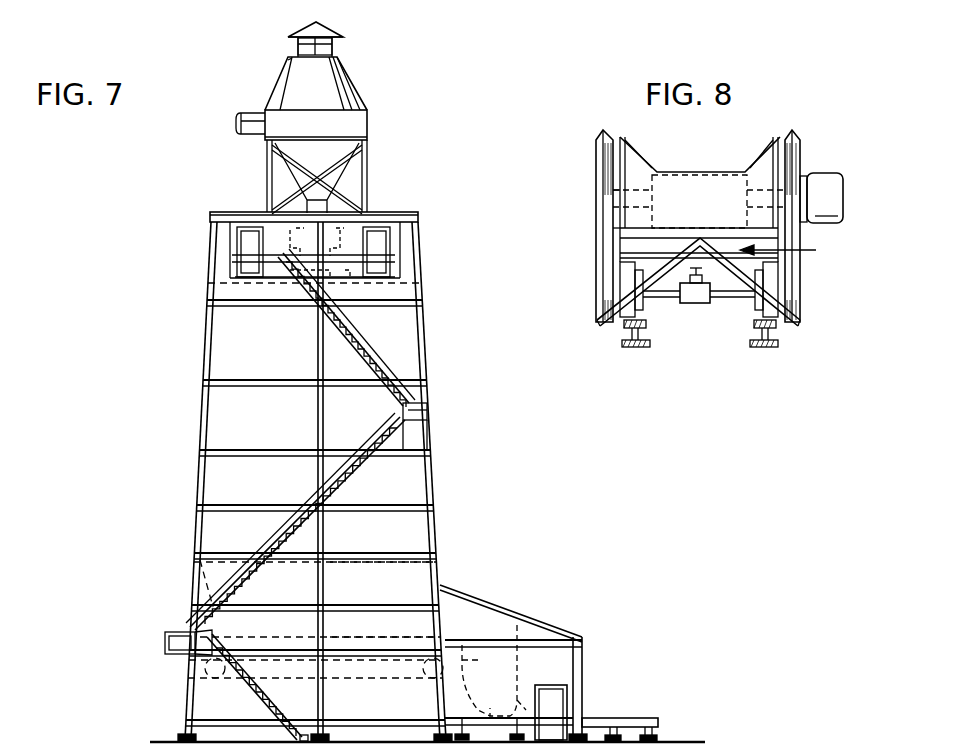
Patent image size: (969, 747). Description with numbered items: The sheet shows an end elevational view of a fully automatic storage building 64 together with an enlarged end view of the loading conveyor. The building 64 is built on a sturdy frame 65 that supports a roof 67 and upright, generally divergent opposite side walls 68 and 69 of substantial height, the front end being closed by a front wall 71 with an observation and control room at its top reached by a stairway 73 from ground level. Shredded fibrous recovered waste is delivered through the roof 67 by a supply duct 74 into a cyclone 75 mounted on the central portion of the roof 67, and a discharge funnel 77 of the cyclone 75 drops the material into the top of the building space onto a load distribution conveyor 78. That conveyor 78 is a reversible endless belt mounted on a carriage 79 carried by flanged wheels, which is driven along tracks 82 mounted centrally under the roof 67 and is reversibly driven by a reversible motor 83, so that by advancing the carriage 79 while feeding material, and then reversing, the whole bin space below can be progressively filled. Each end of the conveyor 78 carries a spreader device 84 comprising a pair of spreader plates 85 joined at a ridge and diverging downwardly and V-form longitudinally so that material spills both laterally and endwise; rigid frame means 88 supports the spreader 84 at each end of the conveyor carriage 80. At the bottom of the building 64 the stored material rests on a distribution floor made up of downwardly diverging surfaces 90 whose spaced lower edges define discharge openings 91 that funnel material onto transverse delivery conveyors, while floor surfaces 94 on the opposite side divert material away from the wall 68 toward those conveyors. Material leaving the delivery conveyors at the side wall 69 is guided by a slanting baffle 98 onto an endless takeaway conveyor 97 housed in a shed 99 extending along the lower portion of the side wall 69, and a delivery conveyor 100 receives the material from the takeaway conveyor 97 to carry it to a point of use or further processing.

In FIG. 7, the storage building 64 is at (196, 241).
In FIG. 7, the frame 65 is at (316, 409).
In FIG. 7, the roof 67 is at (398, 213).
In FIG. 7, the side wall 68 is at (193, 482).
In FIG. 7, the side wall 69 is at (430, 443).
In FIG. 7, the front wall 71 is at (412, 485).
In FIG. 7, the stairway 73 is at (355, 372).
In FIG. 7, the supply duct 74 is at (246, 135).
In FIG. 7, the cyclone 75 is at (355, 124).
In FIG. 7, the discharge funnel 77 is at (362, 200).
In FIG. 8, the load distribution conveyor 78 is at (703, 185).
In FIG. 8, the carriage 79 is at (597, 202).
In FIG. 8, the conveyor carriage 80 is at (622, 326).
In FIG. 8, the tracks 82 is at (750, 346).
In FIG. 8, the reversible motor 83 is at (825, 172).
In FIG. 8, the spreader device 84 is at (795, 254).
In FIG. 8, the spreader plates 85 is at (740, 262).
In FIG. 8, the rigid frame means 88 is at (790, 312).
In FIG. 7, the downwardly diverging surfaces 90 is at (366, 560).
In FIG. 7, the discharge openings 91 is at (355, 635).
In FIG. 7, the floor surfaces 94 is at (228, 628).
In FIG. 7, the takeaway conveyor 97 is at (510, 690).
In FIG. 7, the slanting baffle 98 is at (462, 645).
In FIG. 7, the shed 99 is at (487, 626).
In FIG. 7, the delivery conveyor 100 is at (630, 718).